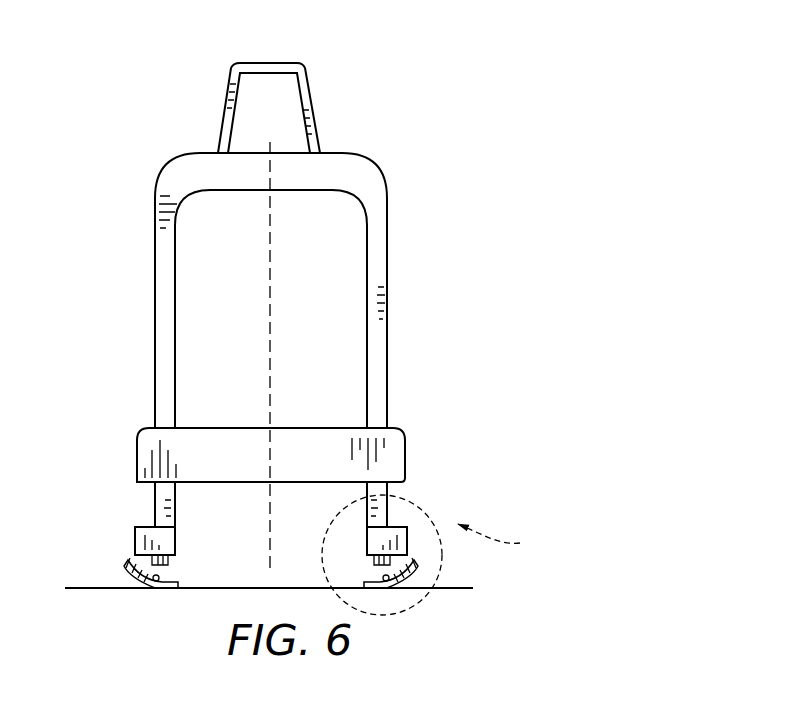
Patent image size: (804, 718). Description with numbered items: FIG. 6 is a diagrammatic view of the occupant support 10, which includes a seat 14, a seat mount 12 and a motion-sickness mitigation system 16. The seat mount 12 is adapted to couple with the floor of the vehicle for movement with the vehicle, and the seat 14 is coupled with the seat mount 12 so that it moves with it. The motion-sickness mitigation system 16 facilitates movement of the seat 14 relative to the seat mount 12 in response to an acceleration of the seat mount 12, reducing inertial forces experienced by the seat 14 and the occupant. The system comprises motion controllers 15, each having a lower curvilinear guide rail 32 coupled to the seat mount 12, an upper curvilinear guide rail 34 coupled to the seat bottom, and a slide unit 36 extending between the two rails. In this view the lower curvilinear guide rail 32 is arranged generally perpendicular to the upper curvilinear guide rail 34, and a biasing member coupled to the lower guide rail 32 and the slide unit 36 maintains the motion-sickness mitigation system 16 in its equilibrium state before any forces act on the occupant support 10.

The occupant support 10 is at (401, 89).
The seat mount 12 is at (448, 591).
The seat 14 is at (414, 176).
The motion controller 15 is at (110, 528).
The motion-sickness mitigation system 16 is at (459, 480).
The lower curvilinear guide rail 32 is at (398, 572).
The upper curvilinear guide rail 34 is at (376, 560).
The slide unit 36 is at (380, 573).